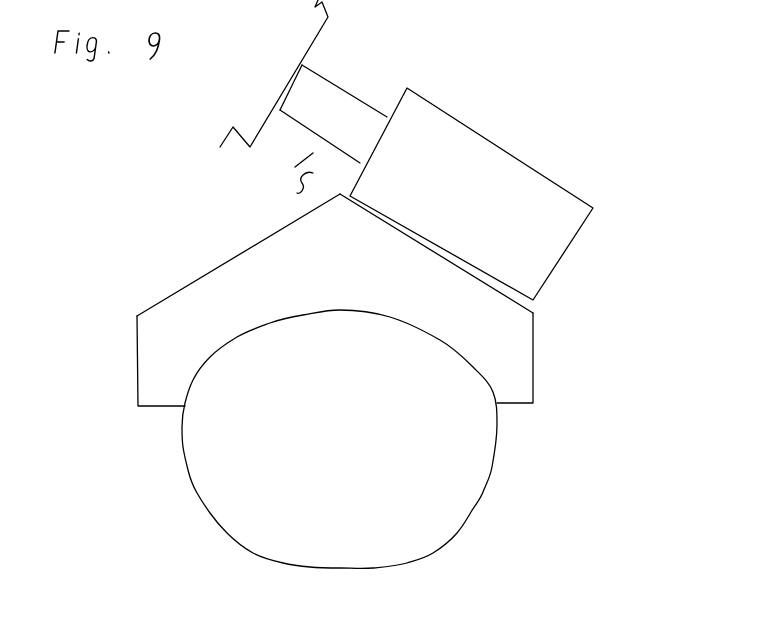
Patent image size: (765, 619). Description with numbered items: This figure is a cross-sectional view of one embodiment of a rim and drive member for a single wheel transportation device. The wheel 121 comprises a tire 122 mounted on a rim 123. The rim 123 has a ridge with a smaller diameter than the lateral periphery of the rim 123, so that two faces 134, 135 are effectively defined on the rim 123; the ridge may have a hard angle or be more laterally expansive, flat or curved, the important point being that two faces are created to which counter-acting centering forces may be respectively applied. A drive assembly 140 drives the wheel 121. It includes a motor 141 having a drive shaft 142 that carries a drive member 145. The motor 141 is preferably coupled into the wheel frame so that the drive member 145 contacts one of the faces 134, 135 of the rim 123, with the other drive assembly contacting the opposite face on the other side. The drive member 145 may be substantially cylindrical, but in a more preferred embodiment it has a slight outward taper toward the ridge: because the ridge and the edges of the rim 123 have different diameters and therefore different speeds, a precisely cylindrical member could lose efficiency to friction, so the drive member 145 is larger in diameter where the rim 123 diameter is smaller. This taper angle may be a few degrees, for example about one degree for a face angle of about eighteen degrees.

The wheel 121 is at (620, 480).
The tire 122 is at (476, 540).
The rim 123 is at (110, 373).
The face 134 is at (253, 250).
The face 135 is at (577, 341).
The drive assembly 140 is at (583, 38).
The motor 141 is at (297, 81).
The drive shaft 142 is at (370, 57).
The drive member 145 is at (484, 207).